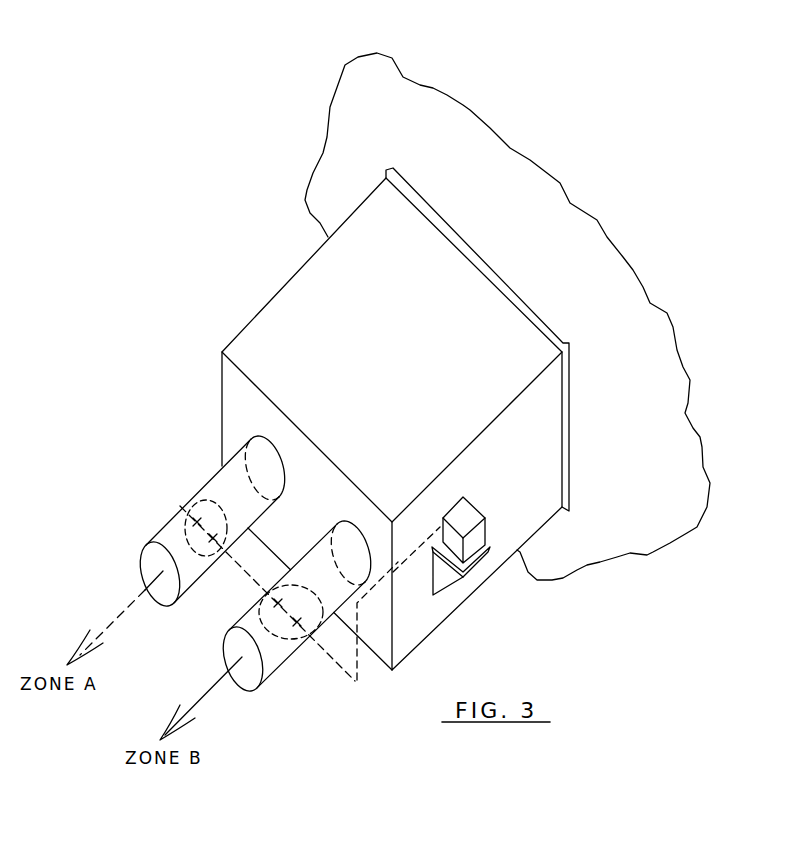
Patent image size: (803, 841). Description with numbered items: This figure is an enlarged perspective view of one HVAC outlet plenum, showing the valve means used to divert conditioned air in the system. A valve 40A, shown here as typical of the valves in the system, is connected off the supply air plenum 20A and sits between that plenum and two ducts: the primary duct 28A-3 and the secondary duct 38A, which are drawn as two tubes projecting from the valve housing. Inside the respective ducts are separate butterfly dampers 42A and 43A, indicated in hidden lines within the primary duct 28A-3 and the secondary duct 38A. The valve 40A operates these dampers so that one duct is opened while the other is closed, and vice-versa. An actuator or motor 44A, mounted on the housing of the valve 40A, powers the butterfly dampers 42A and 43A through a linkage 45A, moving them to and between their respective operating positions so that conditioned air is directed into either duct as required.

The supply air plenum 20A is at (332, 133).
The valve 40A is at (243, 292).
The primary duct 28A-3 is at (155, 553).
The secondary duct 38A is at (249, 690).
The butterfly damper 42A is at (185, 534).
The butterfly damper 43A is at (292, 641).
The actuator or motor 44A is at (477, 512).
The linkage 45A is at (358, 667).